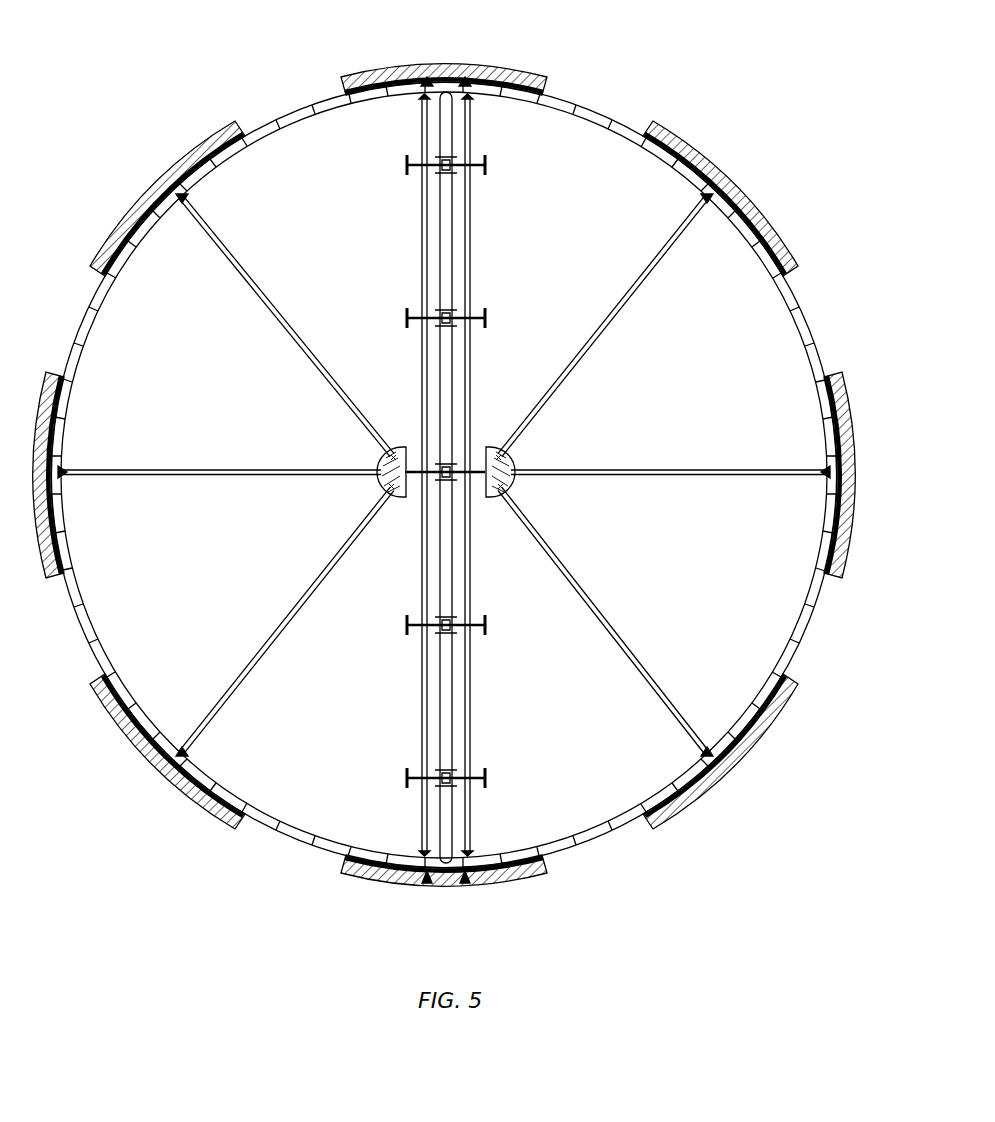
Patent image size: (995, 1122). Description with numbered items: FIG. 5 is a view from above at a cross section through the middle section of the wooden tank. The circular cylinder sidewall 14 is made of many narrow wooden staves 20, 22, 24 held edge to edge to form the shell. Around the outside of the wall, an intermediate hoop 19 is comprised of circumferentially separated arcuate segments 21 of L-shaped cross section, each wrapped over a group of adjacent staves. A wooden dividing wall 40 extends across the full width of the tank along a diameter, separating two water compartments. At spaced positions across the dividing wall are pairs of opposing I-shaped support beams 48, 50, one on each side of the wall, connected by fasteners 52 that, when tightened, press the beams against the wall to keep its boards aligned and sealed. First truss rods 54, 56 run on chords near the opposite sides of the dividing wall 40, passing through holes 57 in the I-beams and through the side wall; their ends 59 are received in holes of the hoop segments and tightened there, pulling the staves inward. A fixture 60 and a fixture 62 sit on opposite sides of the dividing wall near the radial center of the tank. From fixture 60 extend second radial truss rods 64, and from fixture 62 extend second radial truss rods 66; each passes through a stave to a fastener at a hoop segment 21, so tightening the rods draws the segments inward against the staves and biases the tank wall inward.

The circular cylinder sidewall 14 is at (459, 475).
The intermediate hoop 19 is at (708, 160).
The wooden stave 20 is at (822, 338).
The arcuate hoop segment 21 is at (670, 128).
The wooden stave 22 is at (806, 318).
The wooden stave 24 is at (800, 292).
The dividing wall 40 is at (448, 477).
The I-shaped support beam 48 is at (408, 320).
The I-shaped support beam 50 is at (486, 322).
The fastener 52 is at (457, 310).
The first truss rod 54 is at (422, 236).
The first truss rod 56 is at (468, 230).
The hole 57 is at (420, 165).
The truss rod end 59 is at (455, 884).
The fixture 60 is at (402, 447).
The fixture 62 is at (493, 447).
The second radial truss rod 64 is at (218, 482).
The second radial truss rod 66 is at (576, 372).